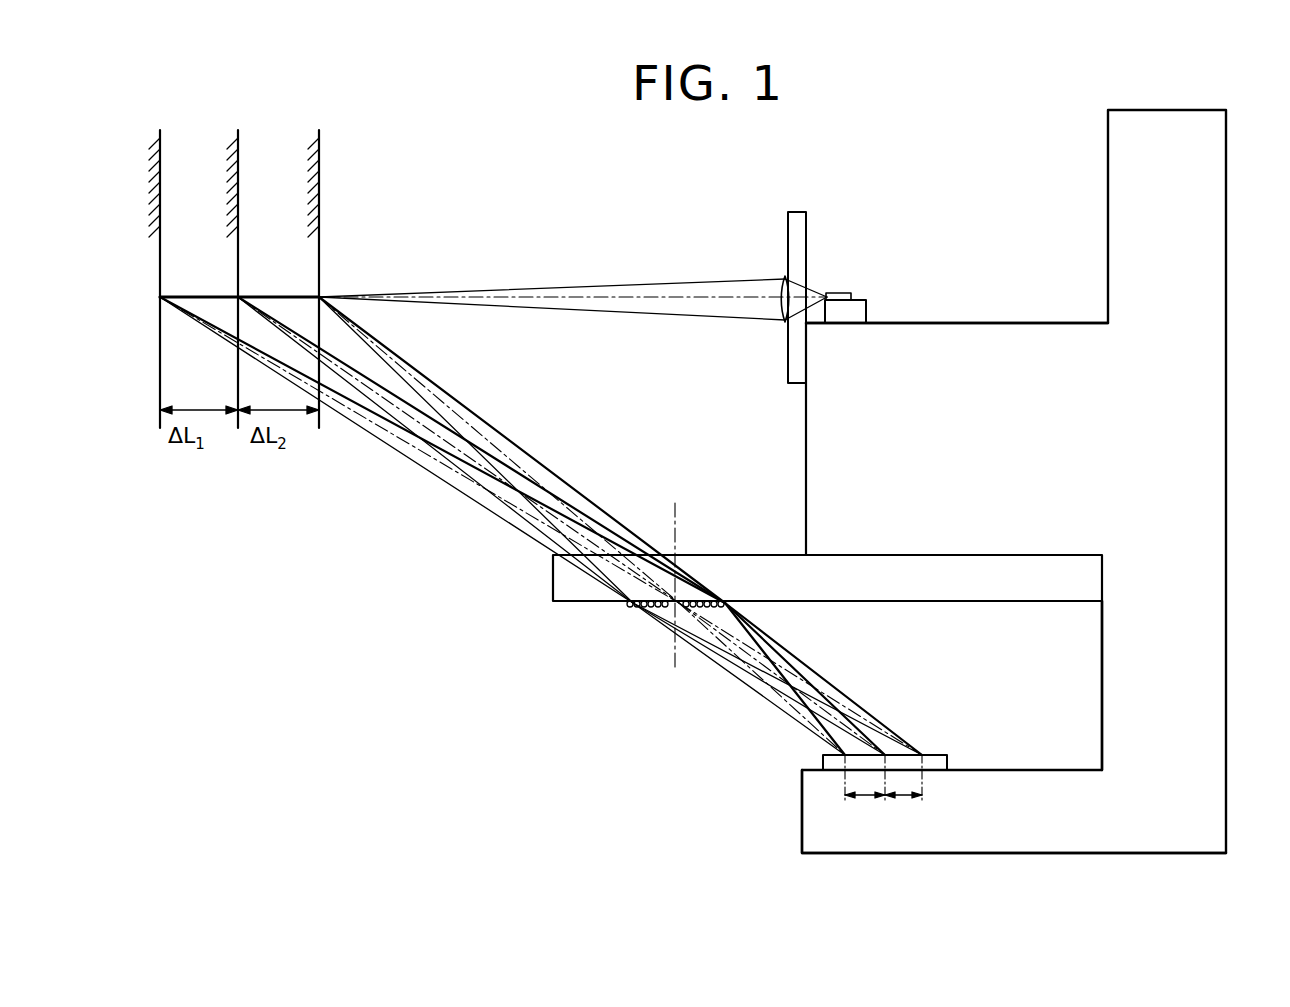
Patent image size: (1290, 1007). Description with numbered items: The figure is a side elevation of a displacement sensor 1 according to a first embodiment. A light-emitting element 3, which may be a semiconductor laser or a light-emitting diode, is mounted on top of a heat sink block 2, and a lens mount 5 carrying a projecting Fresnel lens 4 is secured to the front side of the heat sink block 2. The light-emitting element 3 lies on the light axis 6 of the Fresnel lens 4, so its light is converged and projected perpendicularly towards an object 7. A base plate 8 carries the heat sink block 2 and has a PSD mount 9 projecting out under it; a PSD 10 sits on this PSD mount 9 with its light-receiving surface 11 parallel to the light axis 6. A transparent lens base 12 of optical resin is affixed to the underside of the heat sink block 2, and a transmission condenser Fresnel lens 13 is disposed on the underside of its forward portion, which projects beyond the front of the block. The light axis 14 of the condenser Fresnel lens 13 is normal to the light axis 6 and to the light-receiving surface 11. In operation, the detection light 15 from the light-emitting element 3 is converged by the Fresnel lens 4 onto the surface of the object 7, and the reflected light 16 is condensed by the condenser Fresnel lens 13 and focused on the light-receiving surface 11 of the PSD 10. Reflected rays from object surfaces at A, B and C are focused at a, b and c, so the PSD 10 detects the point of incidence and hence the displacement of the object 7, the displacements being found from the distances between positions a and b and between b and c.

The displacement sensor 1 is at (944, 212).
The heat sink block 2 is at (948, 324).
The light-emitting element 3 is at (838, 295).
The Fresnel lens 4 is at (783, 285).
The lens mount 5 is at (795, 245).
The light axis 6 is at (544, 292).
The object 7 is at (160, 168).
The base plate 8 is at (1200, 545).
The PSD mount 9 is at (988, 836).
The PSD 10 is at (822, 763).
The light-receiving surface 11 is at (940, 752).
The lens base 12 is at (955, 582).
The condenser Fresnel lens 13 is at (645, 612).
The light axis 14 is at (677, 508).
The detection light 15 is at (436, 290).
The reflected light 16 is at (440, 414).